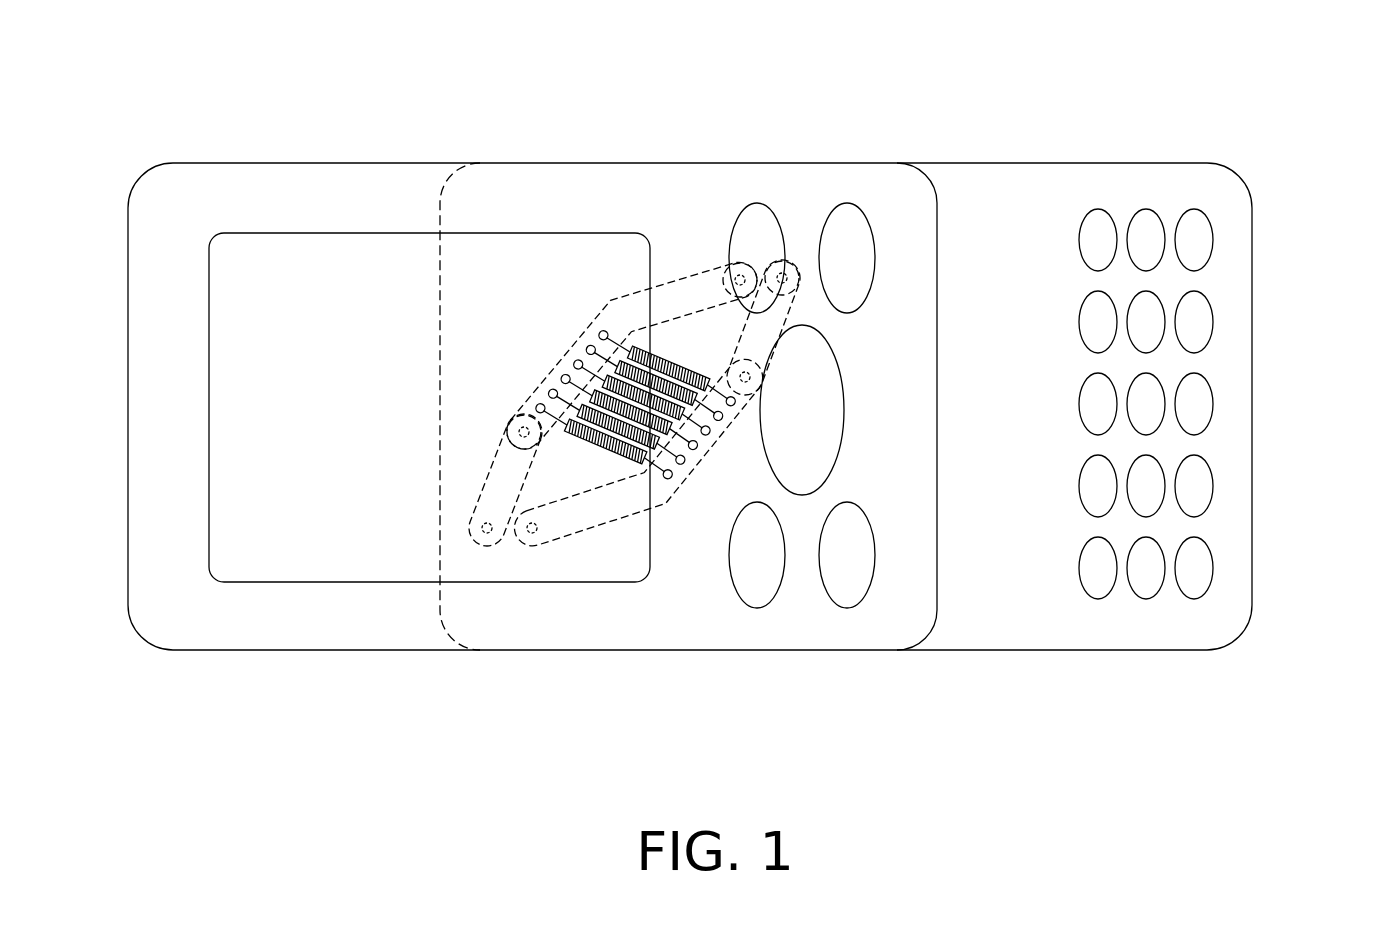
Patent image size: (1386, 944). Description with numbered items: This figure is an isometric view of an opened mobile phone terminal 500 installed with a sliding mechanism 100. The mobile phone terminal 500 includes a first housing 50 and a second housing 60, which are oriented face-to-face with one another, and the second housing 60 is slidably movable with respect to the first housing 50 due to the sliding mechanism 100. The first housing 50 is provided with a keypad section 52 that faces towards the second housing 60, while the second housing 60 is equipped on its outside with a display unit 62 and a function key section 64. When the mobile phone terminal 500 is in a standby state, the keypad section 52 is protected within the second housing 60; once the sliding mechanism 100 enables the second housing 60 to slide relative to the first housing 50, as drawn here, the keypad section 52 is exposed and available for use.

The mobile phone terminal 500 is at (665, 59).
The first housing 50 is at (1203, 632).
The keypad section 52 is at (1197, 488).
The second housing 60 is at (577, 613).
The display unit 62 is at (373, 515).
The function key section 64 is at (848, 570).
The sliding mechanism 100 is at (620, 502).